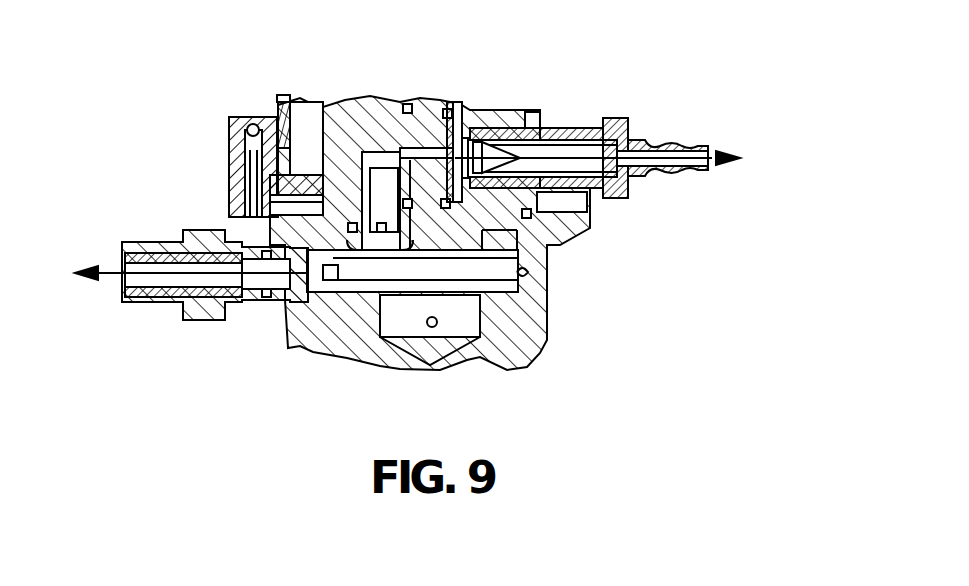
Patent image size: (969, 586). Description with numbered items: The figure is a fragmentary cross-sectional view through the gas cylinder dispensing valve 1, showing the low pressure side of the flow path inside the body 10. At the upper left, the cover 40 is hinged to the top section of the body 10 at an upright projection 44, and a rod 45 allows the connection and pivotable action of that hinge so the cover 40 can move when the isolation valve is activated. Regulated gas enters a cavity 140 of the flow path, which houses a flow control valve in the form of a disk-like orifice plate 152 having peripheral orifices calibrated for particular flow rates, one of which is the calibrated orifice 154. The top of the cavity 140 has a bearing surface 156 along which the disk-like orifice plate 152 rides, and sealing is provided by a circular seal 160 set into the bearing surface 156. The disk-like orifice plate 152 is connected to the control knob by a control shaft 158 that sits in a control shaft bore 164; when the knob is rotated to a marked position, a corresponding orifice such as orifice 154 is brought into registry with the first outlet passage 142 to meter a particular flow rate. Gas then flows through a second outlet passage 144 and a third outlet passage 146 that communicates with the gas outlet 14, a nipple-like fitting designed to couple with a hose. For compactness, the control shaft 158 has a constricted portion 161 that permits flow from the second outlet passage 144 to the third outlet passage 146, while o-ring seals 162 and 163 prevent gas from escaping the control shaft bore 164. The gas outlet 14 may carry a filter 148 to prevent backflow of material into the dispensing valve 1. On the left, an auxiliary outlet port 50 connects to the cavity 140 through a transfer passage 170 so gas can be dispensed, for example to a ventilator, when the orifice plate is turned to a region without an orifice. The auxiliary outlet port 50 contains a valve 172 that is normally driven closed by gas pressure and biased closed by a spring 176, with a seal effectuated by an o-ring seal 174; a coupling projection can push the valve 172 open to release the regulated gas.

The gas cylinder dispensing valve 1 is at (630, 98).
The body 10 is at (562, 319).
The gas outlet 14 is at (642, 140).
The cover 40 is at (226, 168).
The upright projection 44 is at (253, 199).
The rod 45 is at (247, 130).
The auxiliary outlet port 50 is at (207, 318).
The cavity 140 is at (542, 293).
The first outlet passage 142 is at (350, 193).
The second outlet passage 144 is at (384, 150).
The third outlet passage 146 is at (474, 143).
The filter 148 is at (499, 167).
The disk-like orifice plate 152 is at (383, 236).
The calibrated orifice 154 is at (488, 245).
The bearing surface 156 is at (548, 239).
The control shaft 158 is at (434, 100).
The circular seal 160 is at (285, 100).
The constricted portion 161 is at (458, 118).
The o-ring seal 162 is at (409, 104).
The o-ring seal 163 is at (410, 205).
The control shaft bore 164 is at (438, 235).
The transfer passage 170 is at (333, 290).
The valve 172 is at (128, 290).
The o-ring seal 174 is at (267, 298).
The spring 176 is at (160, 298).